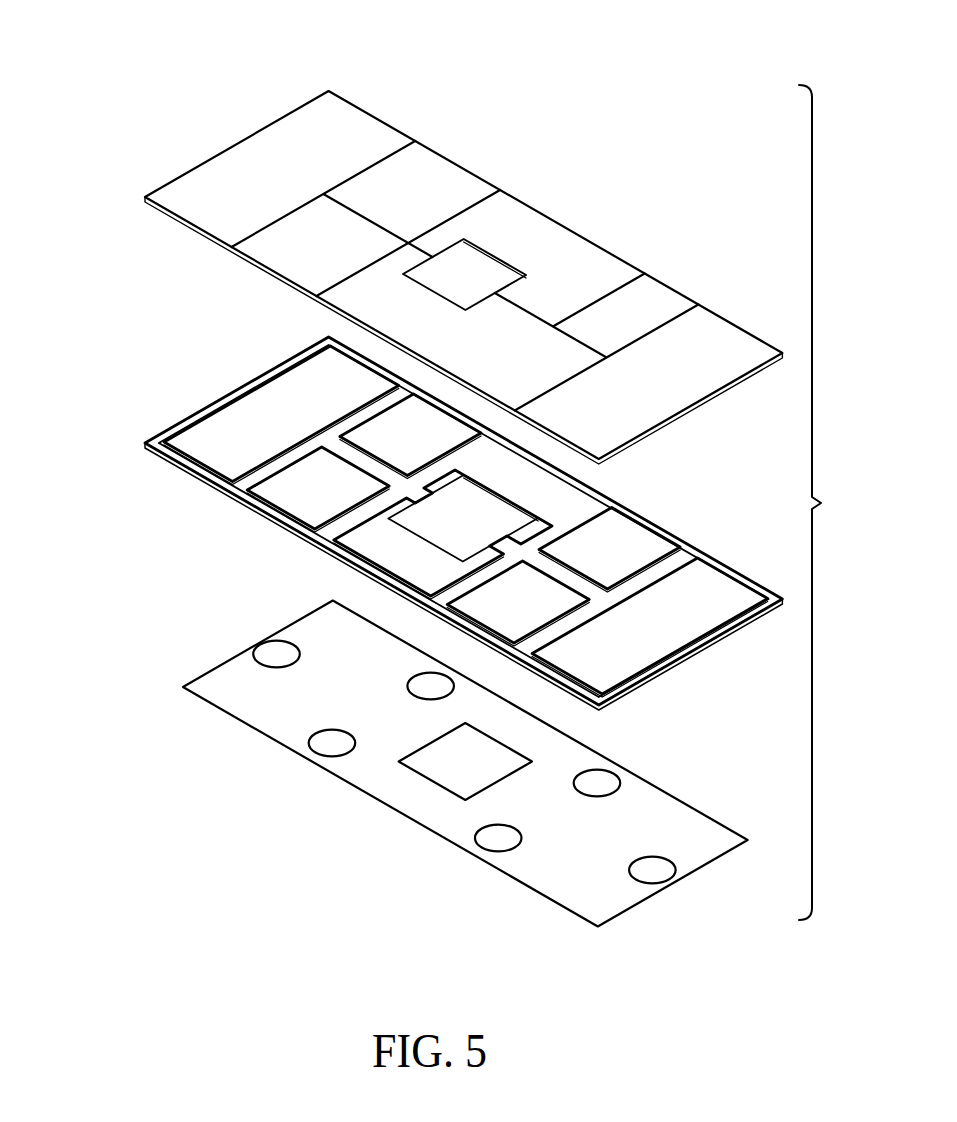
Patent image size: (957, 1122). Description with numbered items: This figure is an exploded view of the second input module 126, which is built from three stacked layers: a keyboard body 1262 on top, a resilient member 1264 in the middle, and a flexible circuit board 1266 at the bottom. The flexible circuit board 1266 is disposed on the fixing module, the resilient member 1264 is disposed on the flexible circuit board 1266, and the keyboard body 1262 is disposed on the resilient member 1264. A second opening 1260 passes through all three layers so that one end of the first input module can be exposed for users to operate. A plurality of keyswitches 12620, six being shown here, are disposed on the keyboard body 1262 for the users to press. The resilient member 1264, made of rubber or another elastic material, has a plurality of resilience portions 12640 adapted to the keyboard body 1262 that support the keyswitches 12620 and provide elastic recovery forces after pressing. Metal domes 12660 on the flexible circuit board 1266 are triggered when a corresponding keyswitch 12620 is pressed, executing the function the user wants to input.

The second input module 126 is at (839, 502).
The second opening 1260 is at (468, 278).
The keyboard body 1262 is at (184, 151).
The keyswitches 12620 is at (388, 178).
The resilient member 1264 is at (184, 401).
The resilience portions 12640 is at (400, 442).
The flexible circuit board 1266 is at (184, 660).
The metal domes 12660 is at (308, 743).